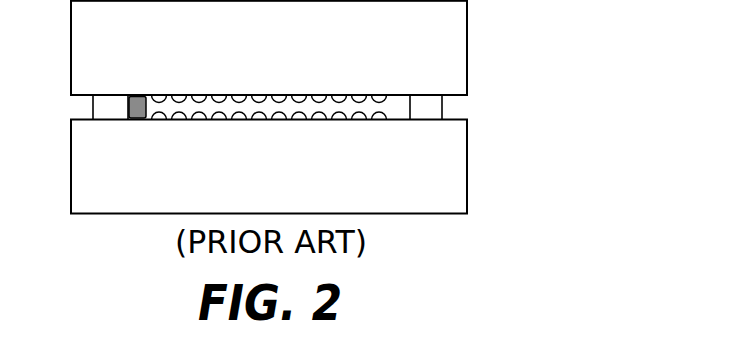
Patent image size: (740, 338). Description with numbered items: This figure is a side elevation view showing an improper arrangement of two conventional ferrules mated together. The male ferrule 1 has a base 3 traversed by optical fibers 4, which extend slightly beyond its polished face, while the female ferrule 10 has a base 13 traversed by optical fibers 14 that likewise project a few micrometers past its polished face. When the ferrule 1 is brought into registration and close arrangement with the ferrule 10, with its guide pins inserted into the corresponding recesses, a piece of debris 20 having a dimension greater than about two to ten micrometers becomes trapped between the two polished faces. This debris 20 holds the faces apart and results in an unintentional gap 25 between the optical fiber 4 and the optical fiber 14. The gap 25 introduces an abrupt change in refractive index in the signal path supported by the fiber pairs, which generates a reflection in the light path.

The ferrule 1 is at (315, 167).
The base 3 is at (436, 204).
The optical fibers 4 is at (215, 131).
The ferrule 10 is at (319, 48).
The base 13 is at (453, 28).
The optical fibers 14 is at (222, 85).
The debris 20 is at (136, 86).
The unintentional gap 25 is at (400, 106).